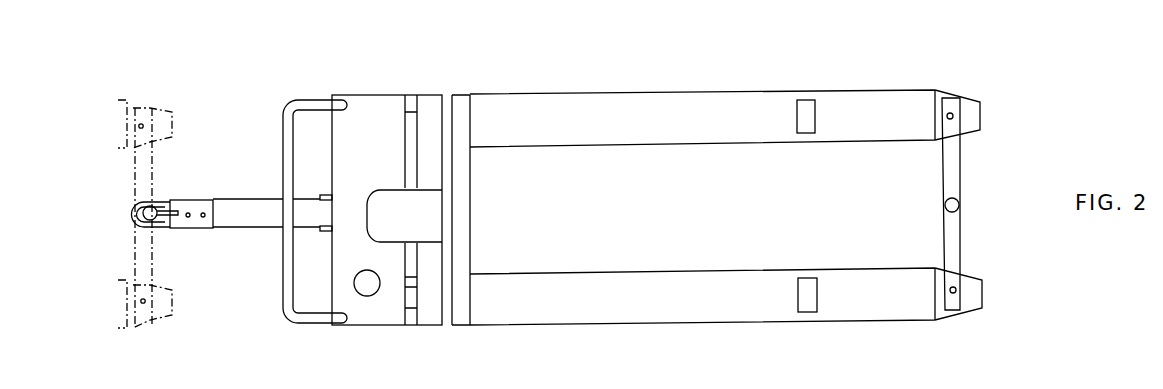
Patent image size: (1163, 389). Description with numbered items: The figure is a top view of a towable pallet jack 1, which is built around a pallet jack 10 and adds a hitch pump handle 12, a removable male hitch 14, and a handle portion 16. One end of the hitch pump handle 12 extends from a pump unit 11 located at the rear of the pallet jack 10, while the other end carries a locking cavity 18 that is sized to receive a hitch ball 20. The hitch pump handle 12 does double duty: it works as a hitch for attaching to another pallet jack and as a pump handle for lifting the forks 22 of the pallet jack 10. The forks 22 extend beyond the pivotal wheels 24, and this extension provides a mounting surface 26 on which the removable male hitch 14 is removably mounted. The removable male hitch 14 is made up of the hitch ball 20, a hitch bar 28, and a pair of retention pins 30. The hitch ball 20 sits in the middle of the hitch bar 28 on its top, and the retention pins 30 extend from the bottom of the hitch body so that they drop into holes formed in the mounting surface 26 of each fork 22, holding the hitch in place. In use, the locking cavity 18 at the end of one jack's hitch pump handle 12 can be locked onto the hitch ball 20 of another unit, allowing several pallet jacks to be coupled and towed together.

The towable pallet jack 1 is at (968, 74).
The pallet jack 10 is at (588, 63).
The pump unit 11 is at (398, 208).
The hitch pump handle 12 is at (225, 194).
The removable male hitch 14 is at (156, 170).
The handle portion 16 is at (292, 320).
The locking cavity 18 is at (158, 220).
The hitch ball 20 is at (959, 202).
The forks 22 is at (682, 103).
The pivotal wheels 24 is at (805, 115).
The mounting surface 26 is at (163, 118).
The hitch bar 28 is at (953, 250).
The retention pins 30 is at (955, 293).